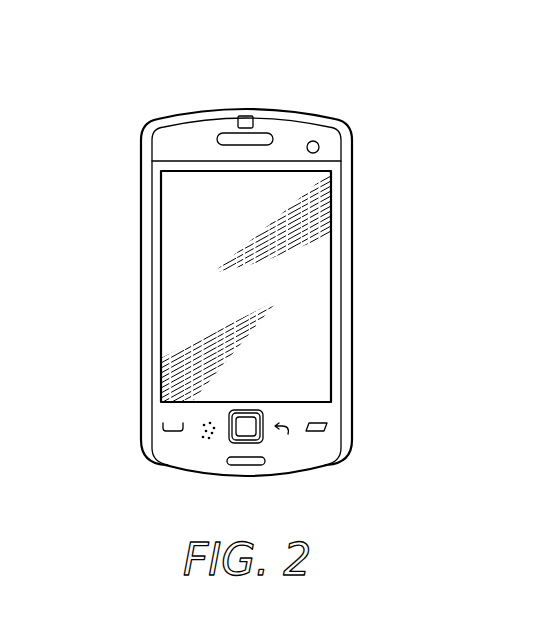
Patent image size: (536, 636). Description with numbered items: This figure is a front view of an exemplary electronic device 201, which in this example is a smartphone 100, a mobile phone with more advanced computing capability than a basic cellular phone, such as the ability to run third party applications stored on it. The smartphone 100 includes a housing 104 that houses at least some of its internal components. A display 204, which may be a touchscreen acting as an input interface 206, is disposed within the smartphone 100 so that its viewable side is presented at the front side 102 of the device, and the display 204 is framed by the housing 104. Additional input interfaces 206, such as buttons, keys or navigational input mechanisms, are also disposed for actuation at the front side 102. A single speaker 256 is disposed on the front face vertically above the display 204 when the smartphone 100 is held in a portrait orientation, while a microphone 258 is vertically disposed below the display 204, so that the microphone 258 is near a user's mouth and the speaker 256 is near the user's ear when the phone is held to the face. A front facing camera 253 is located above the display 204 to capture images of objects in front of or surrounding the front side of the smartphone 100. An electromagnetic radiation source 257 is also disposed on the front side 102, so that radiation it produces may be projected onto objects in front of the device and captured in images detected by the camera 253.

The smartphone 100 is at (130, 108).
The electronic device 201 is at (177, 74).
The front facing camera 253 is at (245, 116).
The speaker 256 is at (263, 133).
The electromagnetic radiation source 257 is at (319, 147).
The housing 104 is at (353, 178).
The display 204 is at (160, 228).
The input interface 206 is at (160, 310).
The front side 102 is at (160, 414).
The microphone 258 is at (245, 465).